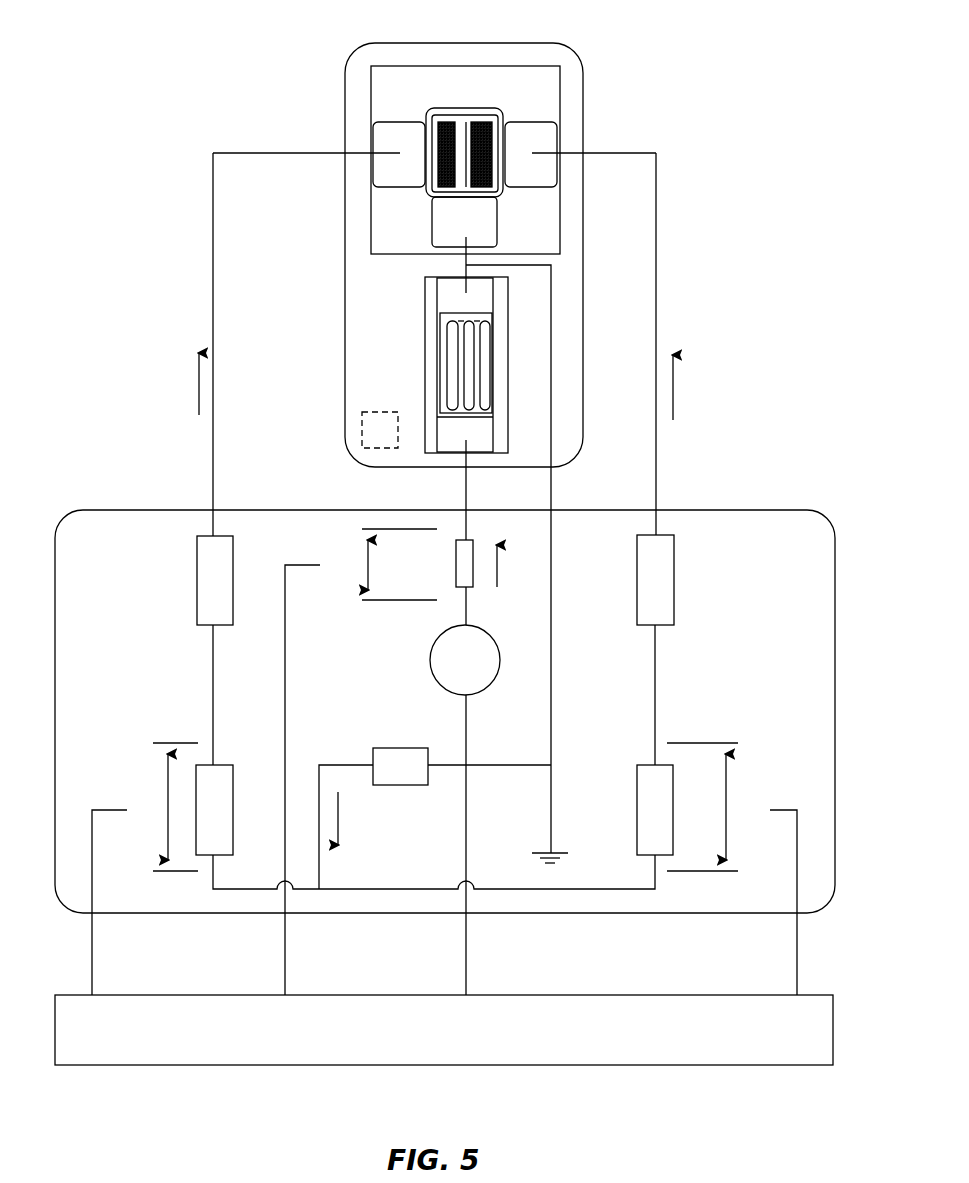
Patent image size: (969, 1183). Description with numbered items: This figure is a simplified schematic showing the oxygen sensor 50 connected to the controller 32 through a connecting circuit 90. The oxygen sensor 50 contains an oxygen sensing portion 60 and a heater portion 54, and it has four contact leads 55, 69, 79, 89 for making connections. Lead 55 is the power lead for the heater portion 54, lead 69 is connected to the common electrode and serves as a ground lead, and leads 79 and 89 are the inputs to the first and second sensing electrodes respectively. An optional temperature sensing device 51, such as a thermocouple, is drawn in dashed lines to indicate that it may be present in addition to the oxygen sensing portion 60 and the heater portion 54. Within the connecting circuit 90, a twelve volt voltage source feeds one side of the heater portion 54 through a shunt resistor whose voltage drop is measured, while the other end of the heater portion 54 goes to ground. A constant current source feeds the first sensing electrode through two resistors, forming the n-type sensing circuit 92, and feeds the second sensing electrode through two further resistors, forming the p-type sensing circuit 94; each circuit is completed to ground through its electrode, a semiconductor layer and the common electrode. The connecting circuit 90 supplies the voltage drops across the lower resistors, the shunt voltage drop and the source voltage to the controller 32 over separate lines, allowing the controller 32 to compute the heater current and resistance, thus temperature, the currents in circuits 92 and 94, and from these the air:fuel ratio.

The oxygen sensor 50 is at (397, 42).
The oxygen sensing portion 60 is at (370, 80).
The lead 79 is at (358, 152).
The lead 89 is at (568, 152).
The n-type sensing circuit 92 is at (213, 243).
The p-type sensing circuit 94 is at (656, 218).
The heater portion 54 is at (437, 298).
The lead 69 is at (522, 267).
The temperature sensing device 51 is at (362, 420).
The lead 55 is at (466, 457).
The connecting circuit 90 is at (760, 508).
The controller 32 is at (472, 1052).